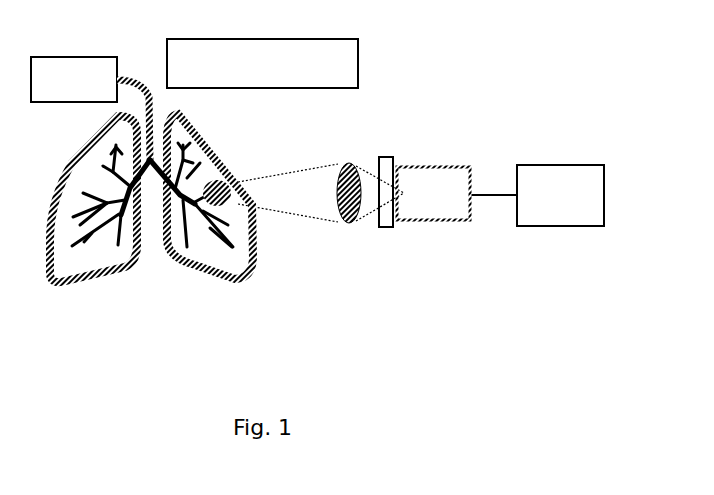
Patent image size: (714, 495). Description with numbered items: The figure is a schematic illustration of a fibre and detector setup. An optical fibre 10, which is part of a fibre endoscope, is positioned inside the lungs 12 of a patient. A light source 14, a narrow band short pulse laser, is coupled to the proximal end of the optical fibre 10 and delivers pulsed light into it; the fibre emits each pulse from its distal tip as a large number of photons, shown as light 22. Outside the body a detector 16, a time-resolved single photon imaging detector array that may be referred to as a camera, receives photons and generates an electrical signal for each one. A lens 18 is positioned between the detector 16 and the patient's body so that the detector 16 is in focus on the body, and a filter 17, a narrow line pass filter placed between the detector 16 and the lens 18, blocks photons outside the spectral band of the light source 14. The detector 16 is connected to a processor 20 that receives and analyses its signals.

The optical fibre 10 is at (140, 87).
The lungs 12 is at (70, 283).
The light source 14 is at (66, 57).
The detector 16 is at (438, 220).
The filter 17 is at (388, 227).
The lens 18 is at (346, 226).
The processor 20 is at (552, 226).
The light 22 is at (220, 177).